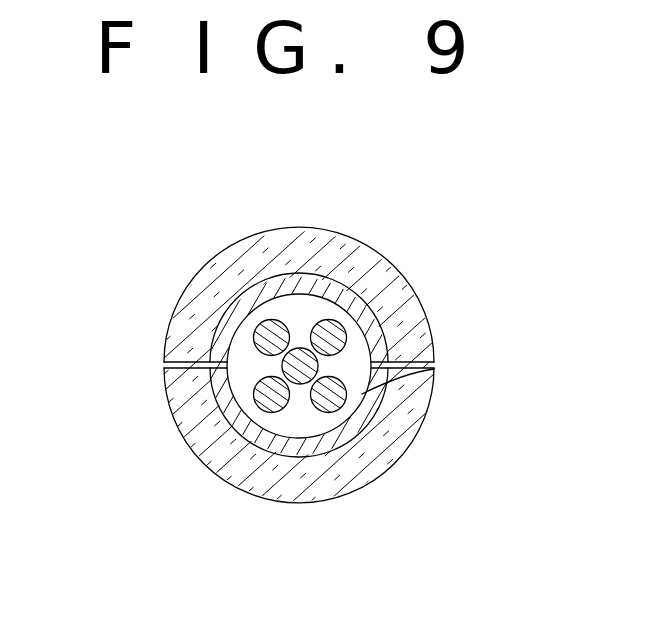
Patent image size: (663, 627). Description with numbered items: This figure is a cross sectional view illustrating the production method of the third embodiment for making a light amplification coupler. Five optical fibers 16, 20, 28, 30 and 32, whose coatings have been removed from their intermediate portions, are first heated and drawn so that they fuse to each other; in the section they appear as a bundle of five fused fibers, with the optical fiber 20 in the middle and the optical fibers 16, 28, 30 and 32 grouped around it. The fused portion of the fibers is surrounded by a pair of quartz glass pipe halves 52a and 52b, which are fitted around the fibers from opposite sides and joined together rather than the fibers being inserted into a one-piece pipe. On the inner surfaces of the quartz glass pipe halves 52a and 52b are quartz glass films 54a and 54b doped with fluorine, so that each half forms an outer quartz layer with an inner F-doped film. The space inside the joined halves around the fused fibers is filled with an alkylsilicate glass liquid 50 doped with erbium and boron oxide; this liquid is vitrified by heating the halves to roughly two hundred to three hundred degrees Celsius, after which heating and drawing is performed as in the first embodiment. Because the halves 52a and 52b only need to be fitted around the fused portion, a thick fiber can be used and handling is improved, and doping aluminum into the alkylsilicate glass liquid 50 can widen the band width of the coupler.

The optical fiber 16 is at (337, 410).
The optical fiber 20 is at (300, 347).
The optical fiber 28 is at (331, 319).
The optical fiber 30 is at (268, 322).
The optical fiber 32 is at (266, 412).
The alkylsilicate glass liquid 50 is at (434, 368).
The quartz glass pipe half 52a is at (167, 344).
The quartz glass pipe half 52b is at (412, 446).
The quartz glass film 54a is at (233, 304).
The quartz glass film 54b is at (362, 403).